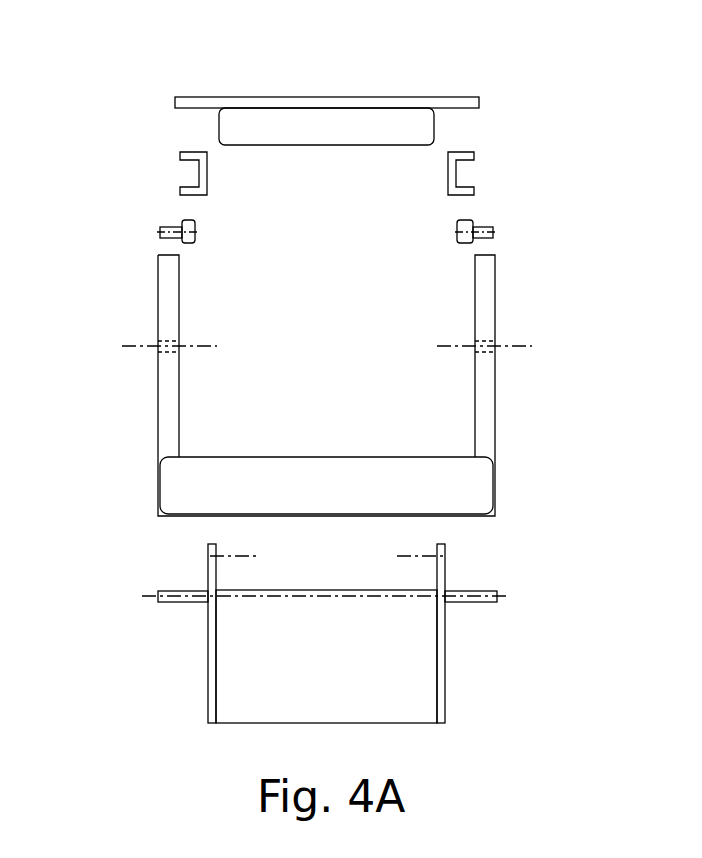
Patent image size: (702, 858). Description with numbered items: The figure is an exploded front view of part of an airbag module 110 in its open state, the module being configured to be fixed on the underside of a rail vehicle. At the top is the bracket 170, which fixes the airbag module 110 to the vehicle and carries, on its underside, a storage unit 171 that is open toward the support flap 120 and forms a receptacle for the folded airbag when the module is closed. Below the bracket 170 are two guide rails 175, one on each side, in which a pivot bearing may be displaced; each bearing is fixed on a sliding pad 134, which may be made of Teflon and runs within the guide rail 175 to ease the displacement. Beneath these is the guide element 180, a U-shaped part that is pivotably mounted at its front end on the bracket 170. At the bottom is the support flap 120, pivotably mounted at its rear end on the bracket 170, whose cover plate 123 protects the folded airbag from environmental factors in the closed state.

The airbag module 110 is at (190, 88).
The bracket 170 is at (483, 97).
The storage unit 171 is at (440, 123).
The guide rail 175 is at (174, 171).
The sliding pad 134 is at (150, 226).
The guide element 180 is at (500, 308).
The support flap 120 is at (456, 614).
The cover plate 123 is at (388, 726).